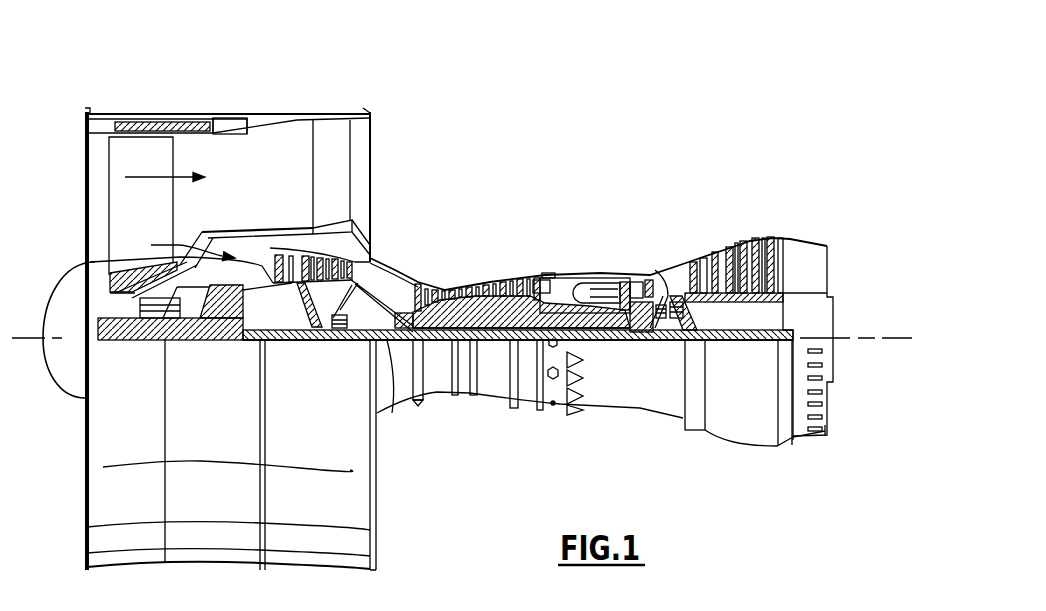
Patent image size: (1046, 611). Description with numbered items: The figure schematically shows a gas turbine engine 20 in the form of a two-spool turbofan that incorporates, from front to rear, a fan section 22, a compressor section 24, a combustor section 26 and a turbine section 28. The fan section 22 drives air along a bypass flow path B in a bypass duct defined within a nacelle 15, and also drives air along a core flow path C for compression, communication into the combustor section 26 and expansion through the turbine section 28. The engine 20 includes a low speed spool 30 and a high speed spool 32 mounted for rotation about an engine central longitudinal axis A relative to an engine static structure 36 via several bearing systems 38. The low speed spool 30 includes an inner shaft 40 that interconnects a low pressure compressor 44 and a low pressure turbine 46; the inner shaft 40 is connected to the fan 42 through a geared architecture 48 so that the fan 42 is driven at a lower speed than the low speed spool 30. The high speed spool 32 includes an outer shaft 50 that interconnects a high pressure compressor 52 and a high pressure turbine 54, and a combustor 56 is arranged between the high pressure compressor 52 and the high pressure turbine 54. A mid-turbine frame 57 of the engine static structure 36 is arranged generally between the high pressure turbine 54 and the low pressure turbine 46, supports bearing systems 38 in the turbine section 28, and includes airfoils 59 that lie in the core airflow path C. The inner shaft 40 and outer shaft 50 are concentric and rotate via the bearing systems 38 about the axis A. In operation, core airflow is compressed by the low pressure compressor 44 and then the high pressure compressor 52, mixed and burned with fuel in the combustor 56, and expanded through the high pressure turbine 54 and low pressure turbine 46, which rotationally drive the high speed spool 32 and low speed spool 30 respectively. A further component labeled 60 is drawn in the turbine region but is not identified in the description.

The nacelle 15 is at (230, 117).
The gas turbine engine 20 is at (601, 145).
The fan section 22 is at (170, 105).
The compressor section 24 is at (411, 260).
The combustor section 26 is at (586, 248).
The turbine section 28 is at (718, 208).
The low speed spool 30 is at (496, 352).
The high speed spool 32 is at (530, 288).
The engine static structure 36 is at (527, 420).
The bearing systems 38 is at (342, 343).
The inner shaft 40 is at (392, 413).
The fan 42 is at (158, 218).
The low pressure compressor 44 is at (355, 222).
The low pressure turbine 46 is at (737, 247).
The geared architecture 48 is at (232, 323).
The outer shaft 50 is at (588, 340).
The high pressure compressor 52 is at (465, 287).
The high pressure turbine 54 is at (637, 277).
The combustor 56 is at (588, 290).
The mid-turbine frame 57 is at (675, 258).
The airfoils 59 is at (688, 308).
The turbine blade 60 is at (703, 266).
The engine central longitudinal axis A is at (905, 316).
The bypass flow path B is at (152, 177).
The core flow path C is at (185, 245).